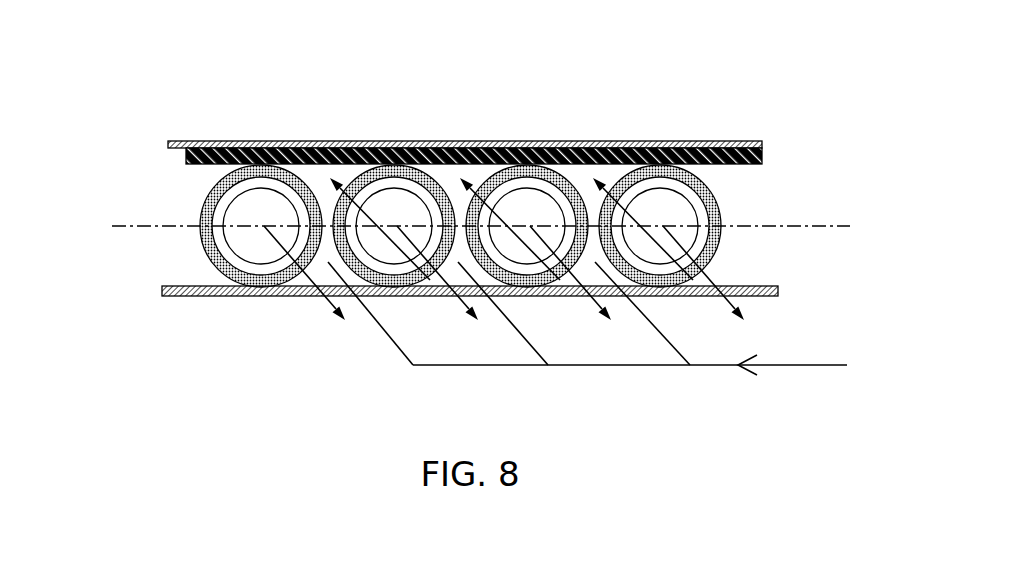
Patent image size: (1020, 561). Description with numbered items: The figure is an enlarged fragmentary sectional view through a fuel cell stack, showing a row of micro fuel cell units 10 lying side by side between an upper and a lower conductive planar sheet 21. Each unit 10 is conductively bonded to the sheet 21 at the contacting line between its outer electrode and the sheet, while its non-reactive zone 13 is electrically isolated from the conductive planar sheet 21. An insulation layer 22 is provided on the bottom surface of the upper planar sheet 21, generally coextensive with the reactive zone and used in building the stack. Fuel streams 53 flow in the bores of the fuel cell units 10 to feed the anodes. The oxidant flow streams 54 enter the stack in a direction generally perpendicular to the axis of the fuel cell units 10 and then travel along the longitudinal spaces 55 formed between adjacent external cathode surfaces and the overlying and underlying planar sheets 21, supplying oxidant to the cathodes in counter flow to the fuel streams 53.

The micro fuel cell unit 10 is at (352, 142).
The non-reactive zone 13 is at (655, 188).
The conductive planar sheet 21 is at (170, 150).
The insulation layer 22 is at (763, 162).
The fuel stream 53 is at (460, 305).
The oxidant stream 54 is at (623, 242).
The longitudinal space 55 is at (408, 142).